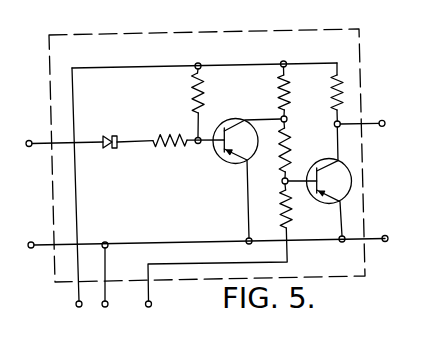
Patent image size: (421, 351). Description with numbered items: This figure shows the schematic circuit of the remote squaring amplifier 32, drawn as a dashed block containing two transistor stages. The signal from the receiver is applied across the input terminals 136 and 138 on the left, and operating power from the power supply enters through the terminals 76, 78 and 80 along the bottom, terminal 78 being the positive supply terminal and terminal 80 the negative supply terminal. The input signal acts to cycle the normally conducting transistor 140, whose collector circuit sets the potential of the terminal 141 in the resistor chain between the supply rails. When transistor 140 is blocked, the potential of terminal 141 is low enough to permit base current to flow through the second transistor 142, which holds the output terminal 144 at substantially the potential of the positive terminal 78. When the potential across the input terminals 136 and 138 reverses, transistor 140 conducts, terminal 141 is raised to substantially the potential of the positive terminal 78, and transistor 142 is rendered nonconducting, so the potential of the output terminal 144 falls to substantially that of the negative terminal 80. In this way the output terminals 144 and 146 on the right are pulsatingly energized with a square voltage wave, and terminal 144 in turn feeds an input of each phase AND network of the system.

The remote squaring amplifier 32 is at (265, 30).
The power supply terminal 76 is at (149, 307).
The positive supply terminal 78 is at (105, 307).
The negative supply terminal 80 is at (79, 307).
The input terminal 136 is at (29, 140).
The input terminal 138 is at (31, 242).
The transistor 140 is at (227, 164).
The terminal 141 is at (281, 118).
The transistor 142 is at (312, 158).
The output terminal 144 is at (382, 120).
The output terminal 146 is at (385, 236).